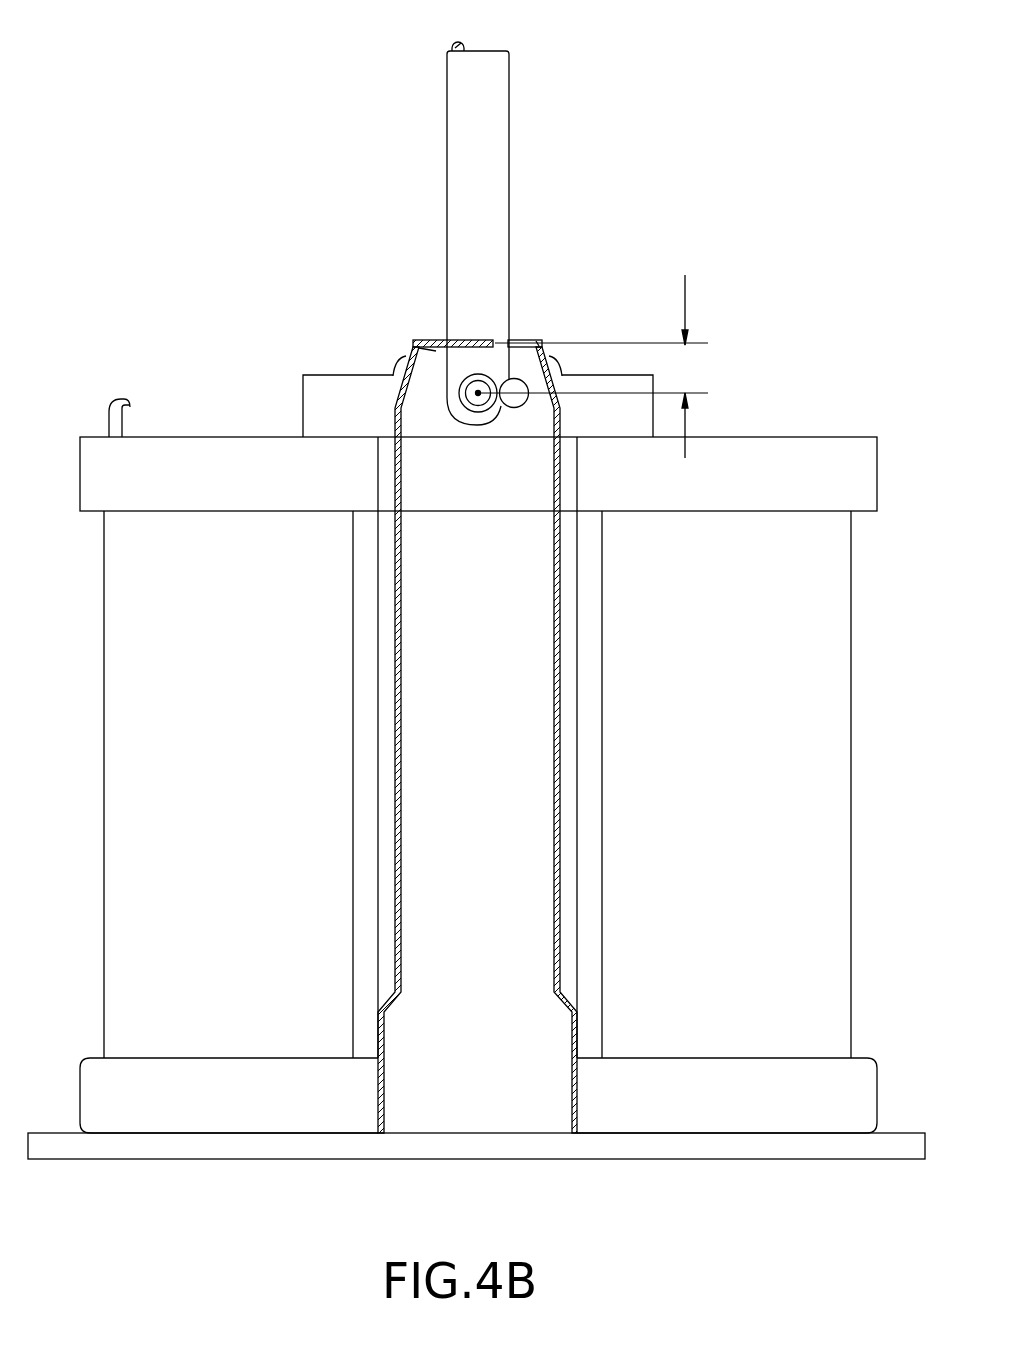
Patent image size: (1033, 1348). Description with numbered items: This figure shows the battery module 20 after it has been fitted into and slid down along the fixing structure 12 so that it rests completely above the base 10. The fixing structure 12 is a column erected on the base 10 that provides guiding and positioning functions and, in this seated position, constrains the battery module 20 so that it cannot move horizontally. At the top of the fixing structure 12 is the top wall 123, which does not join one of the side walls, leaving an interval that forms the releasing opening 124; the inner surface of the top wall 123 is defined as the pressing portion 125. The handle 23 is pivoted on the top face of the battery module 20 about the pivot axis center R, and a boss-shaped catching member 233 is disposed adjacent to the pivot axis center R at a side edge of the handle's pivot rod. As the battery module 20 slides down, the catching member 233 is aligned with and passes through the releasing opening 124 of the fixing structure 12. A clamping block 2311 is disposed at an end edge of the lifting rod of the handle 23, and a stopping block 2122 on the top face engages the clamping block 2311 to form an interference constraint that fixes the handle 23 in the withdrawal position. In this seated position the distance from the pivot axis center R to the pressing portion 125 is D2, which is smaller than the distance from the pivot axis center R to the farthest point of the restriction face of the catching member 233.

The base 10 is at (713, 1149).
The battery module 20 is at (812, 742).
The stopping block 2122 is at (110, 423).
The fixing structure 12 is at (445, 668).
The top wall 123 is at (437, 338).
The releasing opening 124 is at (525, 337).
The pressing portion 125 is at (440, 352).
The handle 23 is at (517, 164).
The clamping block 2311 is at (453, 43).
The pivot axis center R is at (474, 397).
The catching member 233 is at (515, 402).
The distance from the pivot axis center to the pressing portion D2 is at (601, 366).